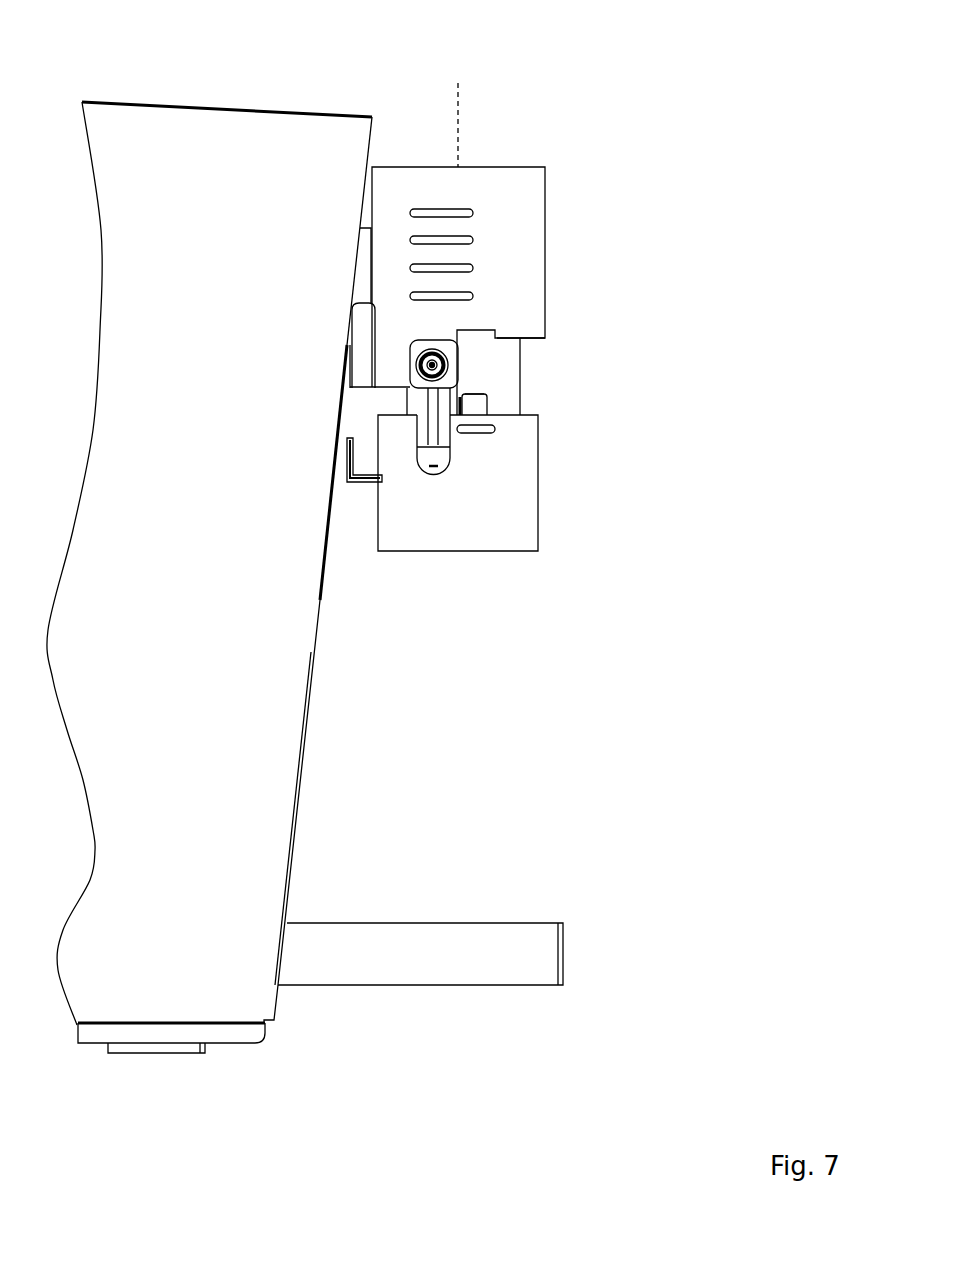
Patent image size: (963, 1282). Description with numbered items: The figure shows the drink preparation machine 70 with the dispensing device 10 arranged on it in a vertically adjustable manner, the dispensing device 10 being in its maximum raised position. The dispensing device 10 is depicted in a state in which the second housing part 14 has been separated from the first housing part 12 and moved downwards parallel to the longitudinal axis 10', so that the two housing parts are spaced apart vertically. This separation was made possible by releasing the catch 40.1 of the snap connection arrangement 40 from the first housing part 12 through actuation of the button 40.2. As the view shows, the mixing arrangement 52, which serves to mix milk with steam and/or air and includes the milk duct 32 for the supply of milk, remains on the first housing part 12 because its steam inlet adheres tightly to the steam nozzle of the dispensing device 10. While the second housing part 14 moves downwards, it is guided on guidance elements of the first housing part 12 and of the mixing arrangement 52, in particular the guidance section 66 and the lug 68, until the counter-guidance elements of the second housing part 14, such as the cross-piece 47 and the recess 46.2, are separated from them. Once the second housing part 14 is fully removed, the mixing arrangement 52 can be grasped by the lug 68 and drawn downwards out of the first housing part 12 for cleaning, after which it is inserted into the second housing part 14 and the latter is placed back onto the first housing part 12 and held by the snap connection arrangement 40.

The drink preparation machine 70 is at (246, 72).
The longitudinal axis 10' is at (490, 116).
The first housing part 12 is at (545, 168).
The dispensing device 10 is at (555, 382).
The guidance section 66 is at (449, 351).
The milk duct 32 is at (447, 365).
The mixing arrangement 52 is at (477, 372).
The snap connection arrangement 40 is at (503, 392).
The catch 40.1 is at (480, 406).
The button 40.2 is at (493, 434).
The lug 68 is at (433, 438).
The second housing part 14 is at (530, 533).
The cross-piece 47 is at (345, 463).
The recess 46.2 is at (446, 470).